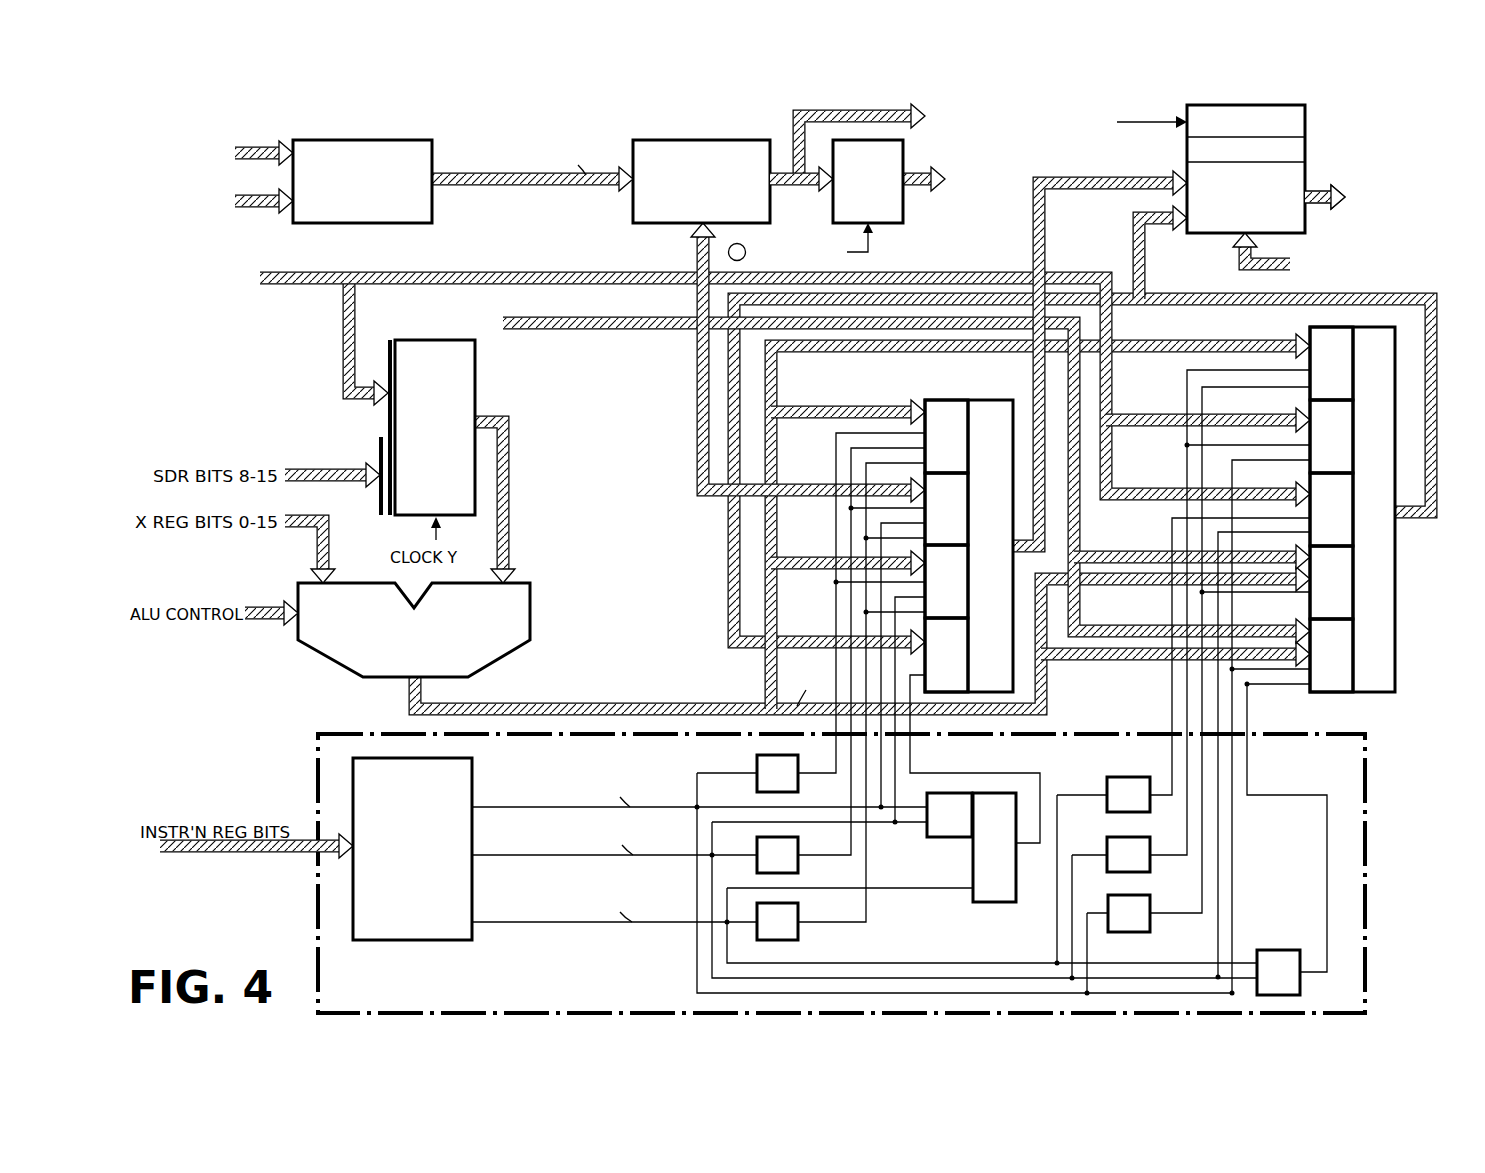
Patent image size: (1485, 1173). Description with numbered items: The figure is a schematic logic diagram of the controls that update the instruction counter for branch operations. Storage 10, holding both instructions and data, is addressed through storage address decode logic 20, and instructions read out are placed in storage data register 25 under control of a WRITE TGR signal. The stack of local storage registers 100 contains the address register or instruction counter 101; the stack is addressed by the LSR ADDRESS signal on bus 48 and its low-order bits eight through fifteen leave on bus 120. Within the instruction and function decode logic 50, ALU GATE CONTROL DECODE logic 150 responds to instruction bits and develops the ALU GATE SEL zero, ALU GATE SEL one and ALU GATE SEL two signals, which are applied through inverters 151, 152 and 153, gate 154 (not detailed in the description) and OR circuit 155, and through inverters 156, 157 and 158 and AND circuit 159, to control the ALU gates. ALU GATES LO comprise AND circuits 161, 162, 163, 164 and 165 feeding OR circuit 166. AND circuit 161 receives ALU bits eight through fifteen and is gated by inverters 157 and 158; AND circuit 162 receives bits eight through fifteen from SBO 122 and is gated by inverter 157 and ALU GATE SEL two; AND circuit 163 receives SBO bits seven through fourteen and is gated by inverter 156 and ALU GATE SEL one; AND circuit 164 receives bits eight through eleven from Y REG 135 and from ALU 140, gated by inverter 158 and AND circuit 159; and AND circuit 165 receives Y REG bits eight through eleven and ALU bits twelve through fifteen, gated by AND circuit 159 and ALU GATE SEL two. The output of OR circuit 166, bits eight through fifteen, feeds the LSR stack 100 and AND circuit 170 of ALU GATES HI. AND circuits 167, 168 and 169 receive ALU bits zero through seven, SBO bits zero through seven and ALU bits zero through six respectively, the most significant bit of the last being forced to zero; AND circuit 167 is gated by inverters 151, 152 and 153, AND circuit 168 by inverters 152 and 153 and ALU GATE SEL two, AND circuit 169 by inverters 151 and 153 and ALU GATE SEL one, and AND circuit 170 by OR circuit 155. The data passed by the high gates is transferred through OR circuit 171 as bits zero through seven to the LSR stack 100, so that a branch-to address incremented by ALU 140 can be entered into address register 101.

The storage 10 is at (633, 140).
The storage address decode logic 20 is at (432, 141).
The storage data register 25 is at (893, 217).
The LSR ADDRESS bus 48 is at (1238, 261).
The instruction and function decode logic 50 is at (1358, 773).
The stack of local storage registers 100 is at (1264, 166).
The address register 101 is at (1299, 147).
The bus 120 is at (1326, 204).
The SBO 122 is at (326, 272).
The Y REG 135 is at (439, 342).
The ALU 140 is at (533, 598).
The ALU GATE CONTROL DECODE logic 150 is at (400, 940).
The inverter 151 is at (800, 786).
The inverter 152 is at (800, 845).
The inverter 153 is at (800, 932).
The AND gate 154 is at (938, 836).
The OR circuit 155 is at (1003, 903).
The inverter 156 is at (1108, 808).
The inverter 157 is at (1150, 868).
The inverter 158 is at (1150, 925).
The AND circuit 159 is at (1275, 950).
The AND circuit 161 is at (1350, 365).
The AND circuit 162 is at (1350, 425).
The AND circuit 163 is at (1353, 490).
The AND circuit 164 is at (1353, 585).
The AND circuit 165 is at (1353, 640).
The OR circuit 166 is at (1396, 655).
The AND circuit 167 is at (970, 438).
The AND circuit 168 is at (970, 495).
The AND circuit 169 is at (970, 607).
The AND circuit 170 is at (970, 655).
The OR circuit 171 is at (1003, 673).